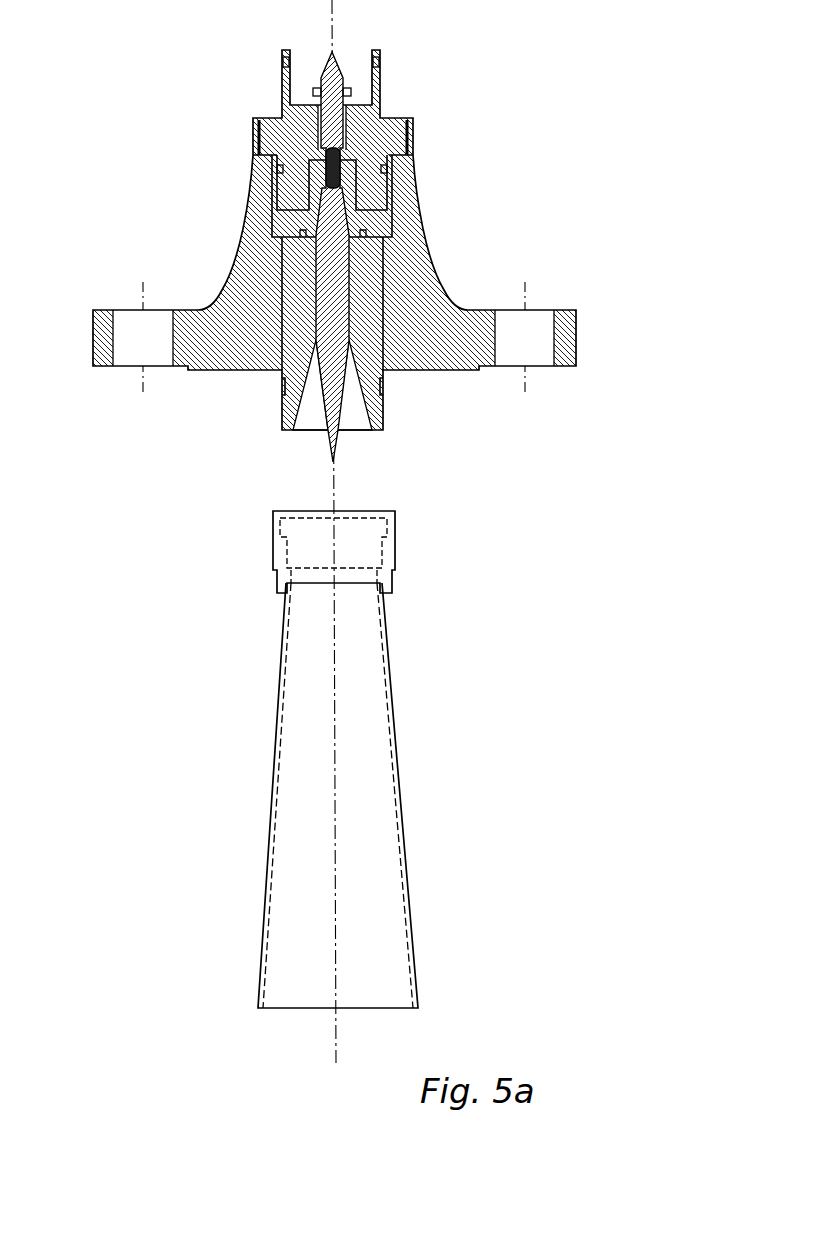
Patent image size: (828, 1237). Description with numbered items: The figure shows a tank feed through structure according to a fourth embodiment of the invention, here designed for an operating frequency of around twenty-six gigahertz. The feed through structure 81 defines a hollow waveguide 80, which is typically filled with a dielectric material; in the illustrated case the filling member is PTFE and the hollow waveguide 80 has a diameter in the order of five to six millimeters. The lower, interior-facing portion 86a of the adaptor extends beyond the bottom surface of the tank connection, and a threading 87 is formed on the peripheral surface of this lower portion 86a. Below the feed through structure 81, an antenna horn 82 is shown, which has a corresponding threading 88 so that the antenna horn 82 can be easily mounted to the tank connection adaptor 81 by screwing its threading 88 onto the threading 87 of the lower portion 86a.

The hollow waveguide 80 is at (332, 130).
The feed through structure 81 is at (518, 183).
The antenna horn 82 is at (393, 722).
The lower portion of the adaptor 86a is at (286, 403).
The threading 87 is at (383, 412).
The corresponding threading 88 is at (378, 548).